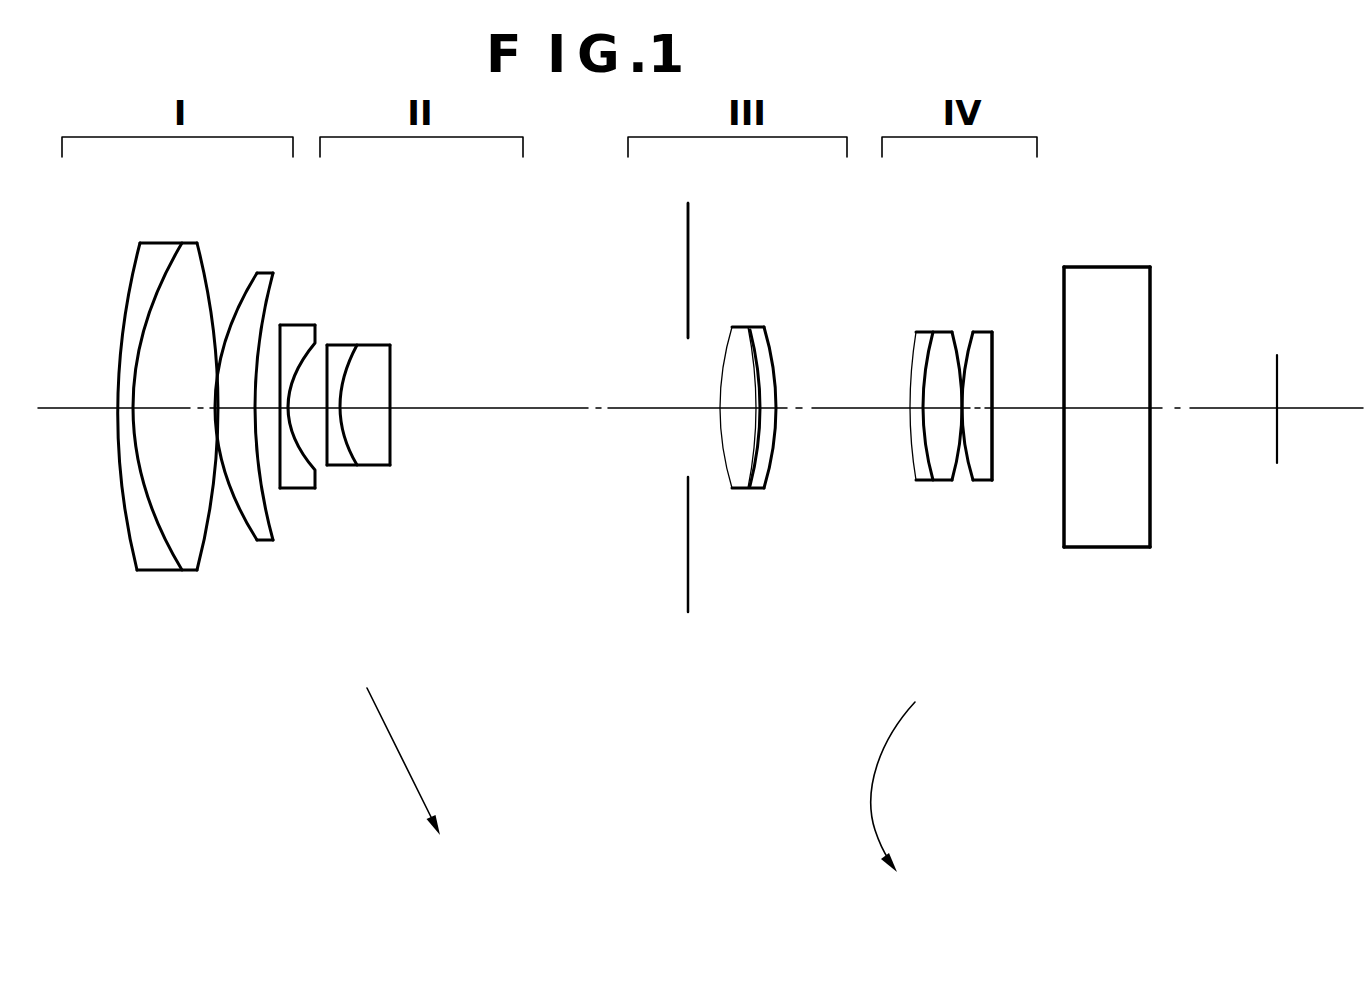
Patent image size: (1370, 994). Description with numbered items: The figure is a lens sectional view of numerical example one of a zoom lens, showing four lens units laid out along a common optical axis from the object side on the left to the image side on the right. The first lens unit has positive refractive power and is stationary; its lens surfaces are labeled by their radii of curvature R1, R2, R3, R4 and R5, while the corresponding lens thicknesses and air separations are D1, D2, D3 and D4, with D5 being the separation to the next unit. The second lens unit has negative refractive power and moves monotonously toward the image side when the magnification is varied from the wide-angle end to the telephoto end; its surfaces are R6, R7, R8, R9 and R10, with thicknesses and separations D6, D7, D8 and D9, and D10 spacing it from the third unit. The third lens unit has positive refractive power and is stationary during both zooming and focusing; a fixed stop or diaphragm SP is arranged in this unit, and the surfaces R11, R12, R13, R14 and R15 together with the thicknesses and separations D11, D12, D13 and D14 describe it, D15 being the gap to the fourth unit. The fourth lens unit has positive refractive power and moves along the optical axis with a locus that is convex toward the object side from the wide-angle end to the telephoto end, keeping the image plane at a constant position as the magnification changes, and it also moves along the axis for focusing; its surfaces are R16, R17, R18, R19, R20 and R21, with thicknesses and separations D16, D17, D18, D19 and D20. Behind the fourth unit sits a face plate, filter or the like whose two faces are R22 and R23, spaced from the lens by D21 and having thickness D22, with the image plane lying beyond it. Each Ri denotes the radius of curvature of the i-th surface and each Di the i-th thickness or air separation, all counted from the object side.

The first lens surface radius of curvature R1 is at (130, 286).
The second lens surface radius of curvature R2 is at (163, 286).
The third lens surface radius of curvature R3 is at (204, 270).
The fourth lens surface radius of curvature R4 is at (244, 294).
The fifth lens surface radius of curvature R5 is at (274, 283).
The sixth lens surface radius of curvature R6 is at (281, 322).
The seventh lens surface radius of curvature R7 is at (306, 350).
The eighth lens surface radius of curvature R8 is at (342, 345).
The ninth lens surface radius of curvature R9 is at (368, 352).
The tenth lens surface radius of curvature R10 is at (393, 364).
The eleventh lens surface radius of curvature R11 is at (688, 234).
The twelfth lens surface radius of curvature R12 is at (728, 362).
The thirteenth lens surface radius of curvature R13 is at (753, 361).
The fourteenth lens surface radius of curvature R14 is at (771, 354).
The fifteenth lens surface radius of curvature R15 is at (774, 358).
The sixteenth lens surface radius of curvature R16 is at (912, 362).
The seventeenth lens surface radius of curvature R17 is at (927, 334).
The eighteenth lens surface radius of curvature R18 is at (951, 346).
The nineteenth lens surface radius of curvature R19 is at (970, 352).
The twentieth lens surface radius of curvature R20 is at (993, 358).
The twenty-first lens surface radius of curvature R21 is at (978, 336).
The face plate surface R22 is at (1064, 290).
The face plate surface R23 is at (1155, 293).
The stop SP is at (688, 559).
The first lens thickness or air separation D1 is at (155, 572).
The second lens thickness or air separation D2 is at (180, 572).
The third lens thickness or air separation D3 is at (217, 406).
The fourth lens thickness or air separation D4 is at (230, 406).
The fifth lens thickness or air separation D5 is at (267, 406).
The sixth lens thickness or air separation D6 is at (293, 489).
The seventh lens thickness or air separation D7 is at (316, 468).
The eighth lens thickness or air separation D8 is at (344, 466).
The ninth lens thickness or air separation D9 is at (371, 466).
The tenth lens thickness or air separation D10 is at (463, 406).
The eleventh lens thickness or air separation D11 is at (700, 406).
The twelfth lens thickness or air separation D12 is at (726, 488).
The thirteenth lens thickness or air separation D13 is at (740, 488).
The fourteenth lens thickness or air separation D14 is at (767, 488).
The fifteenth lens thickness or air separation D15 is at (845, 408).
The sixteenth lens thickness or air separation D16 is at (912, 452).
The seventeenth lens thickness or air separation D17 is at (943, 481).
The eighteenth lens thickness or air separation D18 is at (953, 481).
The nineteenth lens thickness or air separation D19 is at (980, 412).
The twentieth lens thickness or air separation D20 is at (1023, 408).
The twenty-first lens thickness or air separation D21 is at (1063, 546).
The twenty-second lens thickness or air separation D22 is at (1098, 410).